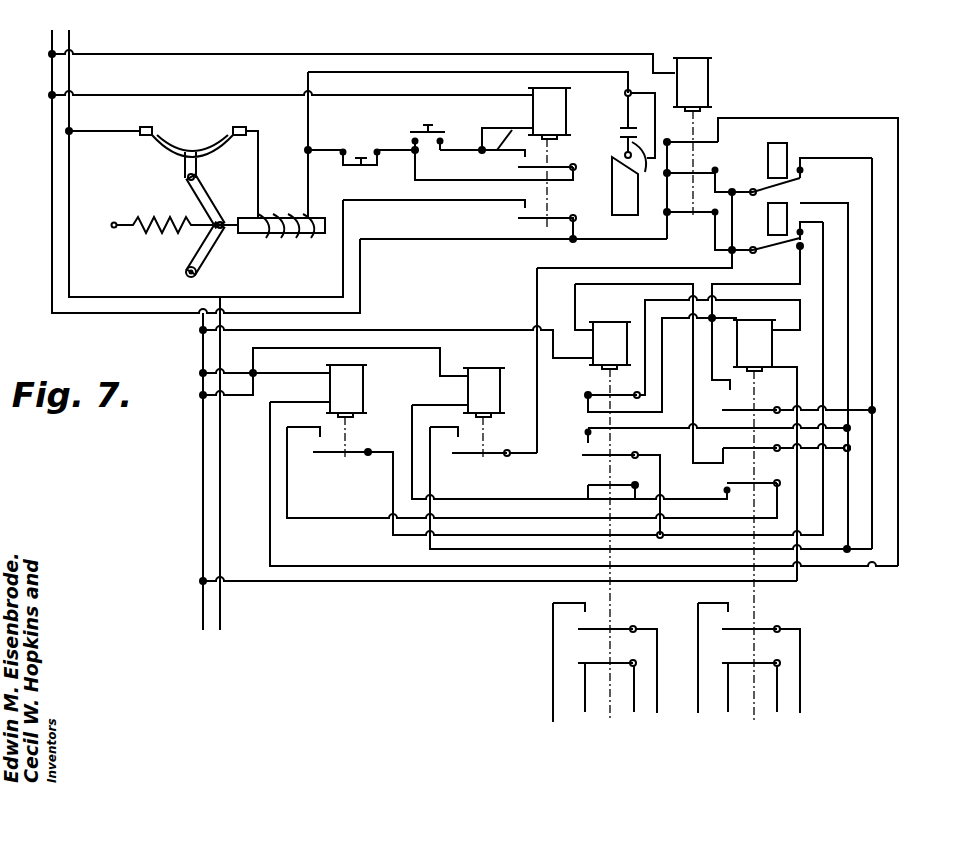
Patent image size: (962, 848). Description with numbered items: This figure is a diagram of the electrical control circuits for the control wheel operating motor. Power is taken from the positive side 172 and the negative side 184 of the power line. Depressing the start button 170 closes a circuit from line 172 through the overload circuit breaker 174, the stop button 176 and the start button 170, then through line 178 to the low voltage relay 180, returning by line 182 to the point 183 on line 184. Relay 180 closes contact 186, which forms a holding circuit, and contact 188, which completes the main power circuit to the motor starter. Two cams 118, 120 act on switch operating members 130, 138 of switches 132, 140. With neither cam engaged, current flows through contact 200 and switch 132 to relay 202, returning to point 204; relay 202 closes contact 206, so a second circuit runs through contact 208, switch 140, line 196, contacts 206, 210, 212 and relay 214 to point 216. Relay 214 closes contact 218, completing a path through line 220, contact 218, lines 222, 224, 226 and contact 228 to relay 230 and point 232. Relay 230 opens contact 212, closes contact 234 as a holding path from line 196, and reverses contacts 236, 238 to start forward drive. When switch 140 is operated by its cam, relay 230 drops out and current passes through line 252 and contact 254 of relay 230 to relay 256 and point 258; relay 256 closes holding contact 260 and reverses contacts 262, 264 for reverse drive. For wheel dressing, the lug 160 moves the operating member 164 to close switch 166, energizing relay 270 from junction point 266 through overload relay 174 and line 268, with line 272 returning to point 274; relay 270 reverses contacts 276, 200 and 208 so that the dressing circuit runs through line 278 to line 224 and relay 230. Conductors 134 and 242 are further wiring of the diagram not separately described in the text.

The cam 118 is at (788, 161).
The cam 120 is at (776, 223).
The switch operating member 130 is at (413, 153).
The switch 132 is at (821, 183).
The conductor 134 is at (846, 158).
The switch operating member 138 is at (570, 240).
The switch 140 is at (767, 316).
The lug 160 is at (625, 186).
The operating member 164 is at (648, 165).
The switch 166 is at (633, 124).
The start button 170 is at (436, 127).
The positive side of the power line 172 is at (221, 503).
The overload circuit breaker 174 is at (191, 138).
The stop button 176 is at (350, 152).
The line 178 is at (499, 153).
The low voltage relay 180 is at (569, 100).
The line 182 is at (374, 95).
The point 183 is at (52, 97).
The negative side of the power line 184 is at (203, 473).
The contact 186 is at (537, 163).
The contact 188 is at (556, 216).
The supply line 196 is at (826, 283).
The contact 200 is at (709, 172).
The relay 202 is at (366, 379).
The point 204 is at (203, 373).
The contact 206 is at (334, 453).
The contact 208 is at (716, 220).
The contact 210 is at (726, 483).
The contact 212 is at (588, 486).
The relay 214 is at (479, 367).
The point 216 is at (203, 396).
The contact 218 is at (476, 454).
The line 220 is at (612, 268).
The line 222 is at (430, 549).
The line 224 is at (850, 504).
The line 226 is at (851, 452).
The contact 228 is at (738, 449).
The relay 230 is at (606, 320).
The point 232 is at (203, 330).
The contact 234 is at (584, 455).
The contact 236 is at (606, 627).
The contact 238 is at (592, 666).
The conductor 242 is at (876, 218).
The line 252 is at (741, 284).
The contact 254 is at (586, 394).
The relay 256 is at (770, 340).
The point 258 is at (203, 582).
The contact 260 is at (726, 409).
The contact 262 is at (750, 627).
The contact 264 is at (738, 666).
The junction point 266 is at (71, 133).
The line 268 is at (306, 111).
The relay 270 is at (713, 83).
The line 272 is at (289, 54).
The point 274 is at (50, 54).
The contact 276 is at (720, 142).
The line 278 is at (801, 117).